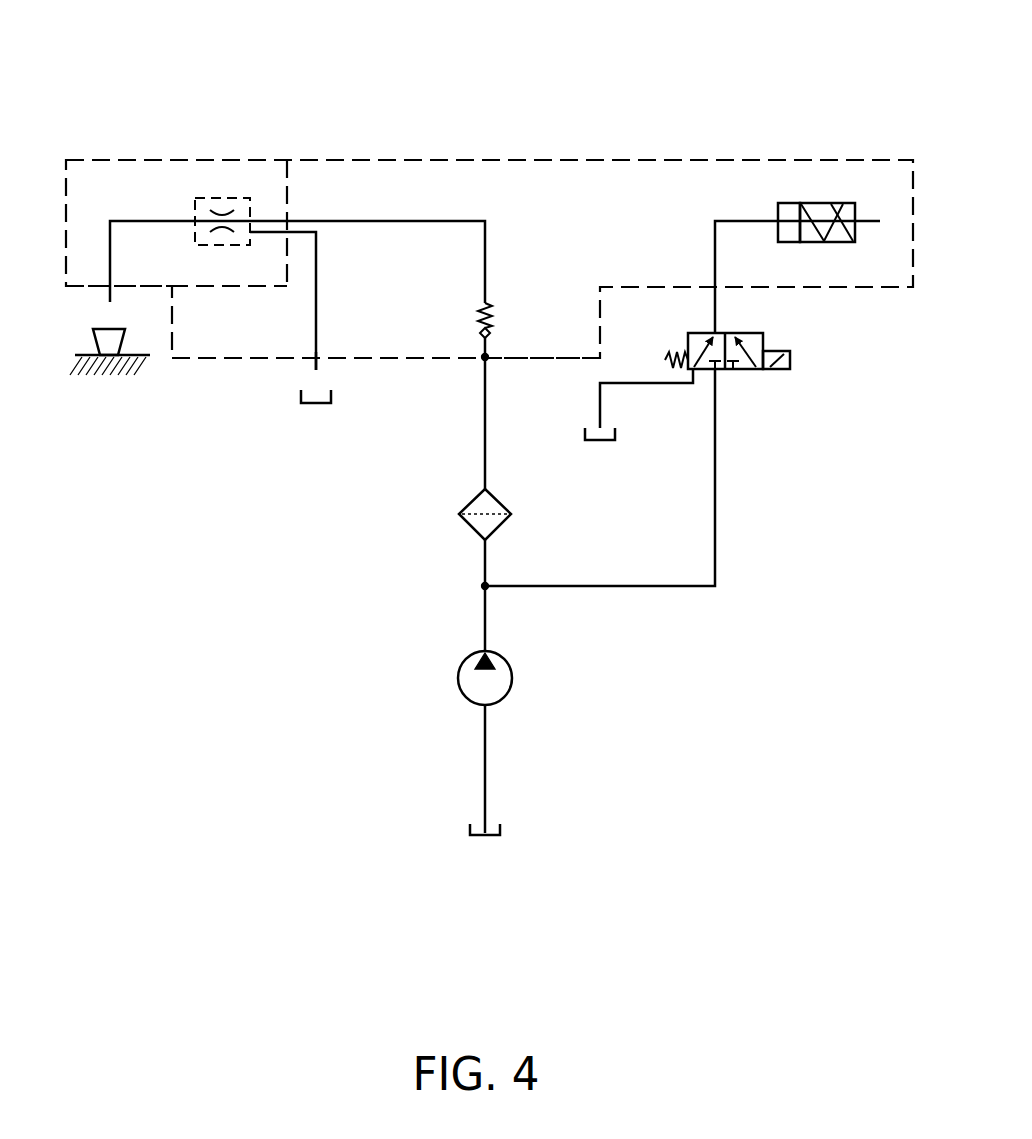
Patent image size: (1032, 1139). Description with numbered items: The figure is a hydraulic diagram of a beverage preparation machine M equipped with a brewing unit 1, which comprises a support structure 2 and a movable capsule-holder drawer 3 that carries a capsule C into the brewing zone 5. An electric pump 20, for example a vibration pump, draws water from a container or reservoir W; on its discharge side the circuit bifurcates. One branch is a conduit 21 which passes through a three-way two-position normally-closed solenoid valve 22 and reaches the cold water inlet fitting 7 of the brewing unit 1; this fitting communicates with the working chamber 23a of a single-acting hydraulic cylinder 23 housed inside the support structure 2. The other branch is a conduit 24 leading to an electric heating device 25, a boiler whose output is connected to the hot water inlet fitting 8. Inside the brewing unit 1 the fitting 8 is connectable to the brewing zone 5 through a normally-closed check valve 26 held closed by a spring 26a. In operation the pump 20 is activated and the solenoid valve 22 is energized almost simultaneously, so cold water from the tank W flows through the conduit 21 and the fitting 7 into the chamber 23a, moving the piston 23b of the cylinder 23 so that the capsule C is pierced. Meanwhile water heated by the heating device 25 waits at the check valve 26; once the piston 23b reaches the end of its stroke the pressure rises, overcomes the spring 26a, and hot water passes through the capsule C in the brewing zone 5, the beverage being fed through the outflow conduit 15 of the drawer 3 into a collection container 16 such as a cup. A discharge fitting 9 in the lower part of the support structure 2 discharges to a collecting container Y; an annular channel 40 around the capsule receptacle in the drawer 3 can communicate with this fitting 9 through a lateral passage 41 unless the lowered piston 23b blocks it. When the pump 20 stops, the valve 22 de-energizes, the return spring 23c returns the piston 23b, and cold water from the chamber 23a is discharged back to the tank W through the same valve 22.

The brewing unit 1 is at (614, 136).
The support structure 2 is at (362, 157).
The movable capsule-holder drawer 3 is at (98, 157).
The brewing zone 5 is at (238, 147).
The capsule C is at (240, 193).
The inlet fitting for cold water 7 is at (715, 285).
The inlet fitting for hot water 8 is at (485, 359).
The discharge fitting 9 is at (316, 372).
The outflow conduit 15 is at (110, 300).
The collection container 16 is at (95, 345).
The electric pump 20 is at (512, 690).
The conduit 21 is at (650, 590).
The three-way two-position normally-closed solenoid valve 22 is at (739, 378).
The single-acting hydraulic cylinder 23 is at (832, 199).
The working chamber 23a is at (791, 203).
The piston 23b is at (838, 243).
The return spring 23c is at (862, 210).
The conduit 24 is at (488, 577).
The electric heating device 25 is at (462, 519).
The normally-closed check valve 26 is at (531, 289).
The spring 26a is at (490, 305).
The annular channel 40 is at (334, 301).
The lateral passage 41 is at (262, 236).
The machine M is at (385, 672).
The container or reservoir W is at (482, 840).
The collecting container Y is at (316, 404).